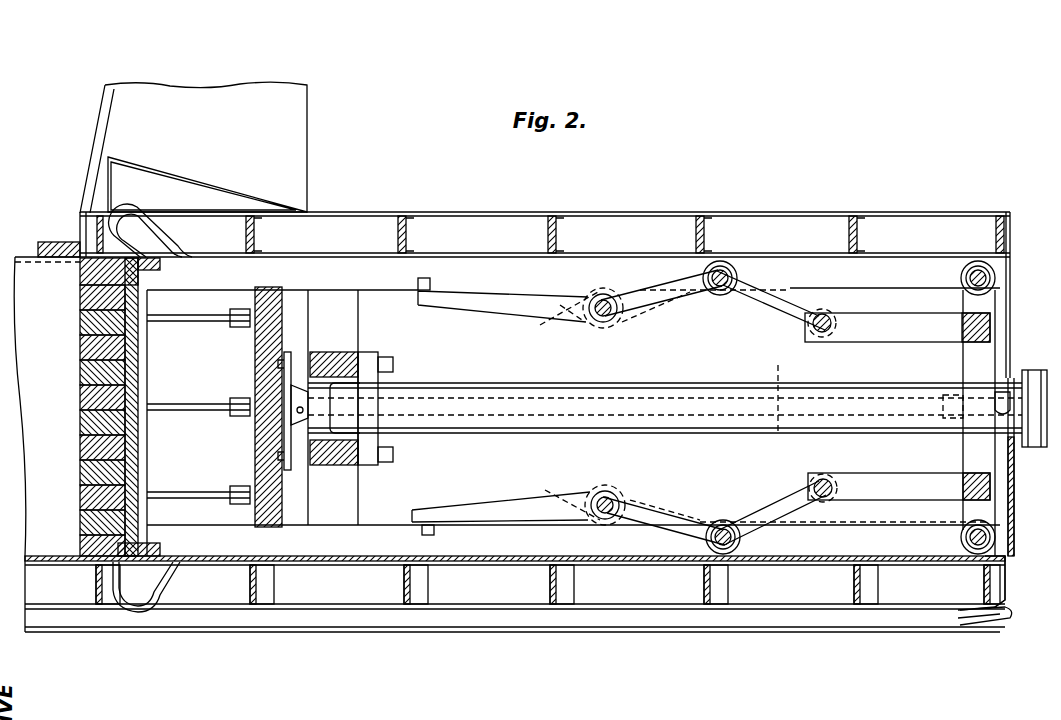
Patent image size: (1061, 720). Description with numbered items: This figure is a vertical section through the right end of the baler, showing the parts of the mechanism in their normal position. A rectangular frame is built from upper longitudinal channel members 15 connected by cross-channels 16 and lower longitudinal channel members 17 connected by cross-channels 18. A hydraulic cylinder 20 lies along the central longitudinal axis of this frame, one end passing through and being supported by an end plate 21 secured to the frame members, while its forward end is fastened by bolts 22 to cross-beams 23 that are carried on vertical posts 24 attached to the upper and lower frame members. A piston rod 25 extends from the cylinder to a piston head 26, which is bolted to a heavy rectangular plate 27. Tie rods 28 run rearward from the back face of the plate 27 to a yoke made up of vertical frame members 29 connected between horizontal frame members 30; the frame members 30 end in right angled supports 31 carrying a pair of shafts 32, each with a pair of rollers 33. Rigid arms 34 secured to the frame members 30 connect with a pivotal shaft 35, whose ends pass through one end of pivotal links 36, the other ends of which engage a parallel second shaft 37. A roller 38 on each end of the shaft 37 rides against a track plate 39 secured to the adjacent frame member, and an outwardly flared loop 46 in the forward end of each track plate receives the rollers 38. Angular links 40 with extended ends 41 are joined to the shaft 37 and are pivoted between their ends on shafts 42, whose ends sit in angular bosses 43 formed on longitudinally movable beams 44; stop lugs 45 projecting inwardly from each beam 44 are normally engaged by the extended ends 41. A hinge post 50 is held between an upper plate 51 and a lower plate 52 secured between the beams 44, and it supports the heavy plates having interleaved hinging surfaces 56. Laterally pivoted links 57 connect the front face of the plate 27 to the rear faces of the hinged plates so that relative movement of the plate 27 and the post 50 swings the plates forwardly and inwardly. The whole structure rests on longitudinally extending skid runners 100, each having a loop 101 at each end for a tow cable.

The upper longitudinal channel members 15 is at (800, 213).
The cross-channels 16 is at (858, 228).
The lower longitudinal channel members 17 is at (952, 594).
The cross-channels 18 is at (870, 605).
The hydraulic cylinder 20 is at (552, 383).
The end plate 21 is at (1014, 490).
The bolts 22 is at (394, 365).
The cross-beams 23 is at (332, 352).
The vertical posts 24 is at (358, 340).
The piston rod 25 is at (333, 466).
The piston head 26 is at (300, 392).
The rectangular plate 27 is at (256, 458).
The tie rods 28 is at (779, 388).
The vertical frame members 29 is at (985, 458).
The horizontal frame members 30 is at (995, 328).
The right angled supports 31 is at (972, 300).
The shafts 32 is at (990, 284).
The rollers 33 is at (996, 278).
The rigid arms 34 is at (910, 330).
The pivotal shaft 35 is at (826, 330).
The pivotal links 36 is at (800, 290).
The second shaft 37 is at (720, 284).
The rollers 38 is at (725, 283).
The track plates 39 is at (990, 253).
The angular links 40 is at (680, 303).
The extended ends 41 is at (463, 307).
The shafts 42 is at (606, 314).
The angular bosses 43 is at (538, 315).
The longitudinally movable beams 44 is at (387, 270).
The stop lugs 45 is at (430, 282).
The outwardly flared loop 46 is at (134, 207).
The hinge post 50 is at (135, 256).
The upper plate 51 is at (160, 265).
The lower plate 52 is at (162, 548).
The interleaved hinging surfaces 56 is at (80, 347).
The laterally pivoted links 57 is at (172, 322).
The skid runners 100 is at (490, 632).
The loop 101 is at (1008, 622).